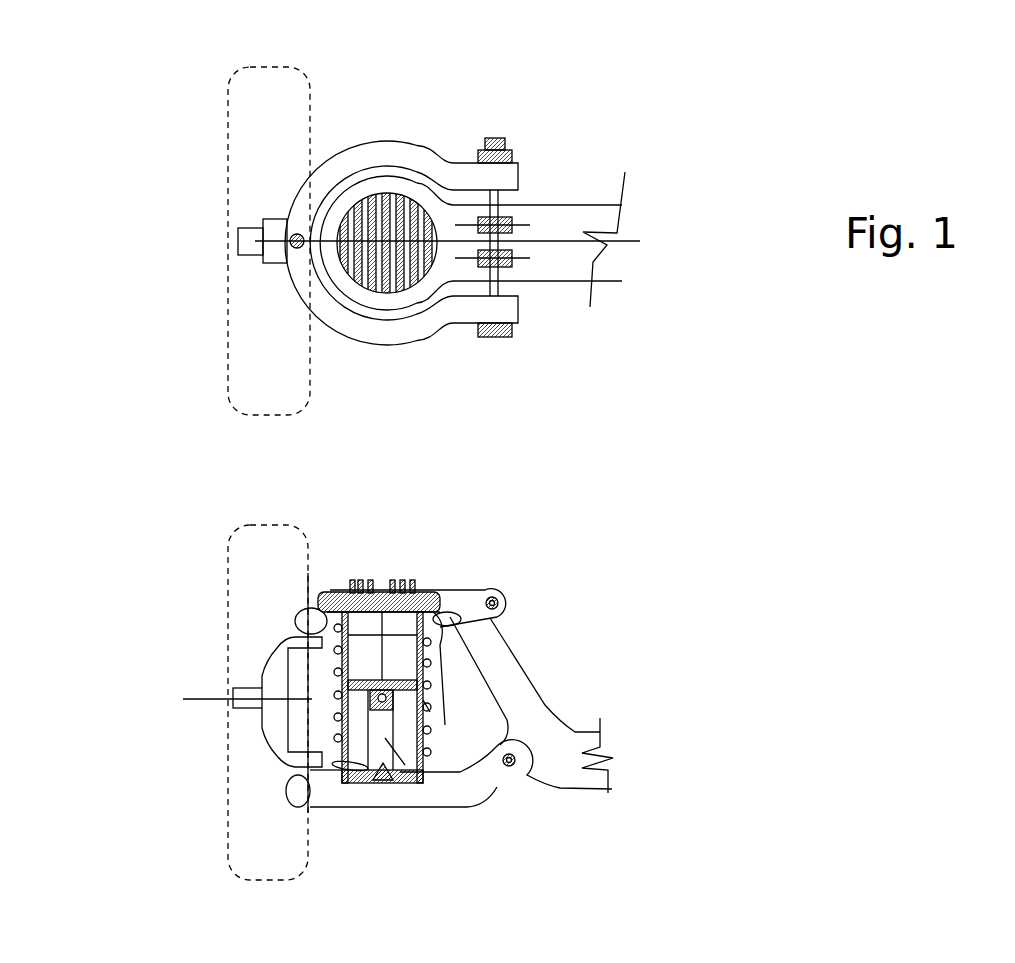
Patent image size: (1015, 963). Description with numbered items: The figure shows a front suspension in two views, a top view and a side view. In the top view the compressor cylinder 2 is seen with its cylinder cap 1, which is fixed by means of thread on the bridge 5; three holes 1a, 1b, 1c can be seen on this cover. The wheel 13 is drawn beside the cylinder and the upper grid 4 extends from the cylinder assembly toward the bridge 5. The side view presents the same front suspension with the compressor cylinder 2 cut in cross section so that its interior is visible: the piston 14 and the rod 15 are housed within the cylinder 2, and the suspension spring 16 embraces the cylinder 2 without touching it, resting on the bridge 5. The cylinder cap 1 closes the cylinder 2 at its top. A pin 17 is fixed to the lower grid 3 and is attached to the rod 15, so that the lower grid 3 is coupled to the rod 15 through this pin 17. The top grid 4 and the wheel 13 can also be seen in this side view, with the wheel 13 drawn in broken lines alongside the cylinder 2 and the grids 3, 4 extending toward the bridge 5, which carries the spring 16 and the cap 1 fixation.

The cylinder cap 1 is at (392, 298).
The hole 1a is at (363, 200).
The hole 1b is at (386, 245).
The hole 1c is at (411, 200).
The compressor cylinder 2 is at (433, 667).
The lower grid 3 is at (449, 773).
The upper grid 4 is at (517, 600).
The bridge 5 is at (562, 215).
The wheel 13 is at (237, 535).
The piston 14 is at (412, 705).
The rod 15 is at (385, 738).
The suspension spring 16 is at (472, 727).
The pin 17 is at (400, 765).